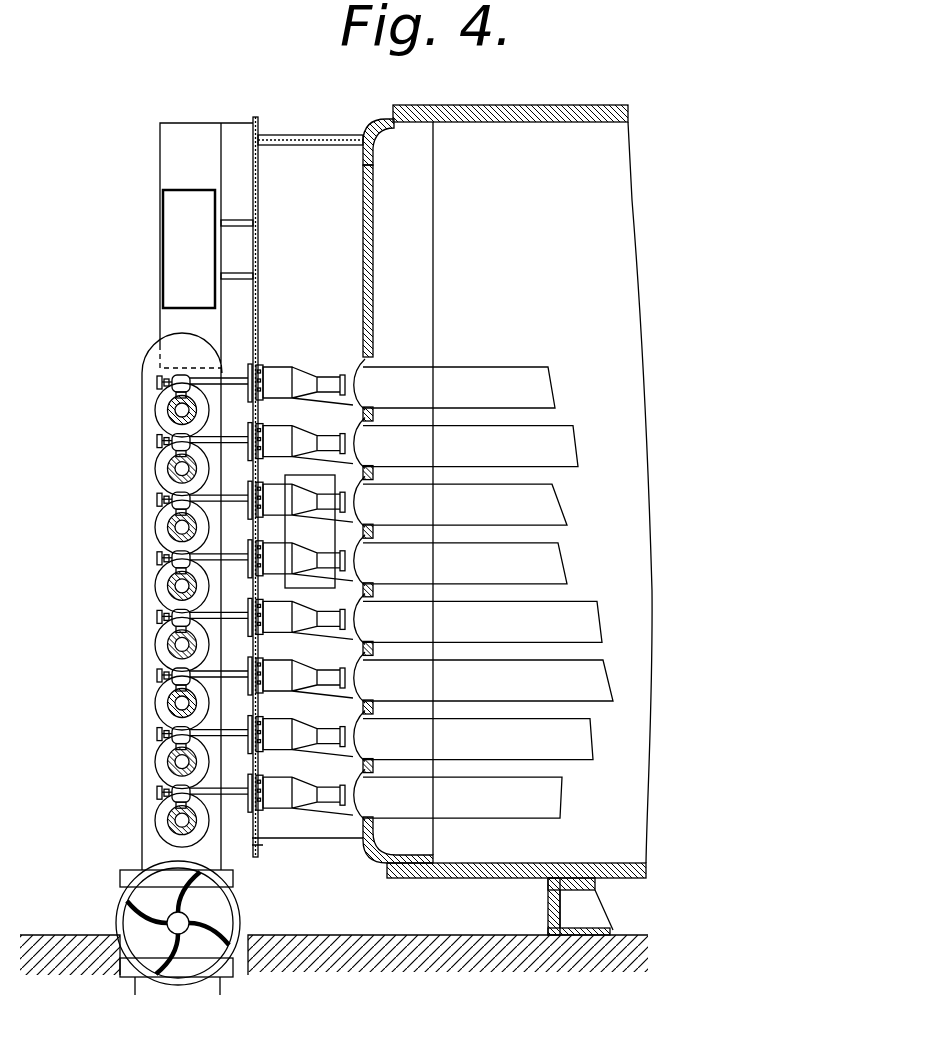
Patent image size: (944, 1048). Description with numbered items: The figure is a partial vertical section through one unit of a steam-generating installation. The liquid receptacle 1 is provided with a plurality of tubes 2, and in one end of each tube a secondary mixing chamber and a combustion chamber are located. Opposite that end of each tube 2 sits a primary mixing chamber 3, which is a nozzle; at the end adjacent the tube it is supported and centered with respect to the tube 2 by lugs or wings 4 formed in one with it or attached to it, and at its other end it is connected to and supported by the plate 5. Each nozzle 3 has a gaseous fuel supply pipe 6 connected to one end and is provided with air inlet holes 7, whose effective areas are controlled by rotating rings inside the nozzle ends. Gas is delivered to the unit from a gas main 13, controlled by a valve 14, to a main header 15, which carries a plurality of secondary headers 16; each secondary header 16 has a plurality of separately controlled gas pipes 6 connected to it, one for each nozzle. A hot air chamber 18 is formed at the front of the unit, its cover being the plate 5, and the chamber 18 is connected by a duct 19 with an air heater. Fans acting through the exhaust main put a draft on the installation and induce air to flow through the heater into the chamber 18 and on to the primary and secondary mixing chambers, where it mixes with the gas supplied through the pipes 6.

The liquid receptacle 1 is at (552, 117).
The tubes 2 is at (488, 592).
The primary mixing chamber 3 is at (307, 591).
The lugs or wings 4 is at (332, 392).
The plate 5 is at (267, 317).
The gaseous fuel supply pipe 6 is at (234, 383).
The air inlet holes 7 is at (262, 424).
The gas main 13 is at (176, 942).
The valve 14 is at (232, 898).
The main header 15 is at (142, 523).
The secondary headers 16 is at (168, 465).
The hot air chamber 18 is at (307, 490).
The duct 19 is at (206, 245).